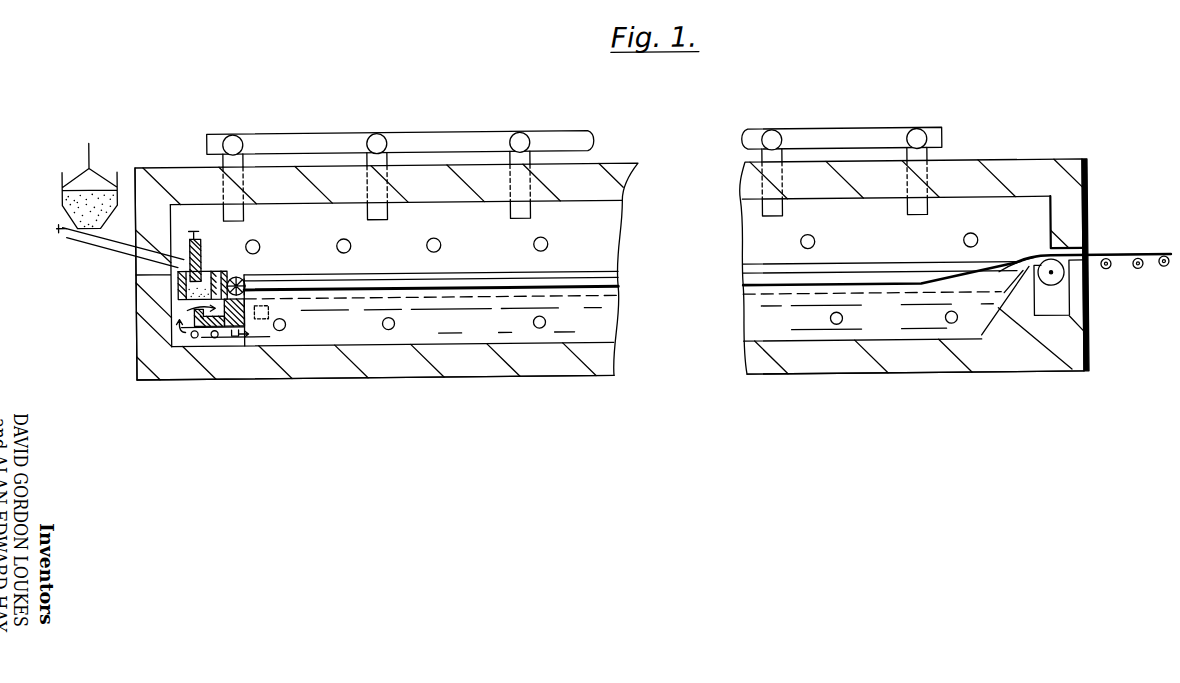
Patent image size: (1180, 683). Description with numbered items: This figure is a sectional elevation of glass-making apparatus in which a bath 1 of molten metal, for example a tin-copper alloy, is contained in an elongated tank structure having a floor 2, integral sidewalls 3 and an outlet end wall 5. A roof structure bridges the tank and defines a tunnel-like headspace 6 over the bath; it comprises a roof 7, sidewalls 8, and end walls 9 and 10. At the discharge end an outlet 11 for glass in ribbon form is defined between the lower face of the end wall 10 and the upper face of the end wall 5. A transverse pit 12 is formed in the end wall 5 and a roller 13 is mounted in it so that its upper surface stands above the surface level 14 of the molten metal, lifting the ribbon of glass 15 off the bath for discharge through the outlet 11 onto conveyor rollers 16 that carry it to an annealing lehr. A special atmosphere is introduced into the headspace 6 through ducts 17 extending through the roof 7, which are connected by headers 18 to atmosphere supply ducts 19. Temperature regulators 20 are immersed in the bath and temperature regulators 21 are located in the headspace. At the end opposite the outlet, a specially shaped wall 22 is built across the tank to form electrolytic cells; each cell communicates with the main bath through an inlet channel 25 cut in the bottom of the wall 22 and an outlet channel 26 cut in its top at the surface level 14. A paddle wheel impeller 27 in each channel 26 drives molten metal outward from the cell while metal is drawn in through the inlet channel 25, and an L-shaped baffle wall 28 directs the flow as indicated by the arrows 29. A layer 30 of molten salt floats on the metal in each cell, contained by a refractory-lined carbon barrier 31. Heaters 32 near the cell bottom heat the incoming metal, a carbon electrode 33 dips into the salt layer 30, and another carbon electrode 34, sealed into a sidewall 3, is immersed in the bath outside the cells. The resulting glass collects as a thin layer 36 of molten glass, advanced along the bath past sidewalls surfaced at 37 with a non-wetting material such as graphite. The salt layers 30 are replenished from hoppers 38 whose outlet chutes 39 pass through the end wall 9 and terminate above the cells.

The bath 1 is at (647, 319).
The floor 2 is at (610, 359).
The sidewalls 3 is at (568, 283).
The end wall 5 is at (1032, 318).
The headspace 6 is at (490, 239).
The roof 7 is at (612, 182).
The sidewalls 8 is at (796, 213).
The end wall 9 is at (153, 274).
The end wall 10 is at (1069, 265).
The outlet 11 is at (1090, 264).
The transverse pit 12 is at (1059, 287).
The roller 13 is at (1064, 284).
The surface level 14 is at (297, 286).
The ribbon of glass 15 is at (1018, 269).
The conveyor rollers 16 is at (1158, 278).
The ducts 17 is at (243, 215).
The headers 18 is at (234, 136).
The atmosphere supply ducts 19 is at (449, 135).
The temperature regulators 20 is at (385, 332).
The temperature regulators 21 is at (258, 247).
The wall 22 is at (243, 330).
The inlet channel 25 is at (232, 340).
The outlet channel 26 is at (242, 281).
The paddle wheel impeller 27 is at (236, 278).
The L-shaped baffle wall 28 is at (209, 336).
The arrows 29 is at (170, 335).
The layer of molten salt 30 is at (188, 268).
The carbon barrier 31 is at (214, 270).
The heaters 32 is at (191, 340).
The carbon electrode 33 is at (205, 229).
The carbon electrode 34 is at (285, 325).
The layer of molten glass 36 is at (455, 291).
The surfacing 37 is at (387, 285).
The hoppers 38 is at (62, 185).
The outlet chutes 39 is at (105, 243).